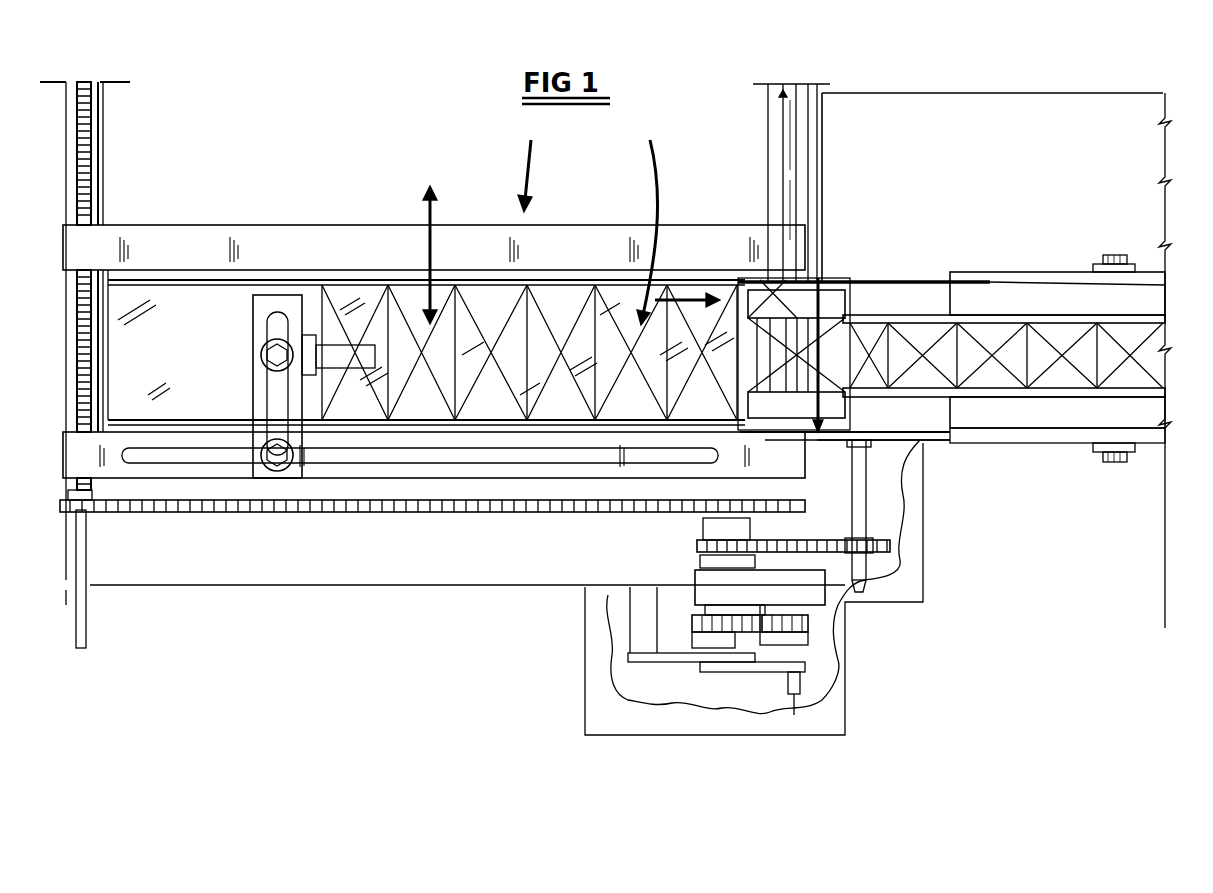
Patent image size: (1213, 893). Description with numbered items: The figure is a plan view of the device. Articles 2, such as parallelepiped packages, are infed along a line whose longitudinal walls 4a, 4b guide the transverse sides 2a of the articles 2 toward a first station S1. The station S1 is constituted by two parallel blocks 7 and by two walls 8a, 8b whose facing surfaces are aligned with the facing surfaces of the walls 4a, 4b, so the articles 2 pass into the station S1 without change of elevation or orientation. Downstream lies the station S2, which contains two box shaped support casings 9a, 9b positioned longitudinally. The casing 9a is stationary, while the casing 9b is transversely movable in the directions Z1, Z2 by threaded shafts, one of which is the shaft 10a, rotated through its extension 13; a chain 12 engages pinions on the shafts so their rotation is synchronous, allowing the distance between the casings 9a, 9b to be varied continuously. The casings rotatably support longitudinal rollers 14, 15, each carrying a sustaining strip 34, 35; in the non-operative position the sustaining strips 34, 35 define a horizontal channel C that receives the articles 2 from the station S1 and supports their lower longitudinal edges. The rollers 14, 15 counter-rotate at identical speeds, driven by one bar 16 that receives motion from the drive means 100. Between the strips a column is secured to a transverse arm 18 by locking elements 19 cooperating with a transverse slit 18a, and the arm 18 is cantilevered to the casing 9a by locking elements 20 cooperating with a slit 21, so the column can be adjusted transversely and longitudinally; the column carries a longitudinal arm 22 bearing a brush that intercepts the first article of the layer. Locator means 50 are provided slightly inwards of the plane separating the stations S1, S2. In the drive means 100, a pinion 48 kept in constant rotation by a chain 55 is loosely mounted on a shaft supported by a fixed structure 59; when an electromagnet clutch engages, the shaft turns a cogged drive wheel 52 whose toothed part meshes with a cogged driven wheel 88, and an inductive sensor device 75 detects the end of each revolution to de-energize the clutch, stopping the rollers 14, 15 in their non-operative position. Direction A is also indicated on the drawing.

The threaded shaft 10a is at (93, 177).
The support casing 9b is at (183, 245).
The article 2 is at (607, 300).
The slit 21 is at (333, 458).
The locking elements 20 is at (285, 455).
The chain 12 is at (145, 512).
The extension 13 is at (84, 614).
The support casing 9a is at (183, 468).
The transverse slit 18a is at (273, 392).
The transverse arm 18 is at (255, 472).
The locking elements 19 is at (270, 350).
The longitudinal arm 22 is at (345, 350).
The longitudinal roller 15 is at (237, 293).
The sustaining strip 35 is at (280, 300).
The longitudinal roller 14 is at (360, 413).
The sustaining strip 34 is at (488, 423).
The transverse direction Z1 is at (446, 255).
The transverse direction Z2 is at (454, 321).
The second station S2 is at (536, 160).
The horizontal channel C is at (649, 217).
The direction A is at (697, 295).
The block 7 is at (823, 292).
The first station S1 is at (835, 292).
The locator means 50 is at (760, 290).
The longitudinal wall 4b is at (1073, 287).
The transverse side 2a is at (945, 293).
The wall 8b is at (887, 305).
The longitudinal wall 4a is at (1030, 420).
The wall 8a is at (775, 448).
The bar 16 is at (870, 555).
The pinion 48 is at (697, 546).
The fixed structure 59 is at (762, 602).
The cogged drive wheel 52 is at (740, 623).
The cogged driven wheel 88 is at (800, 636).
The inductive sensor device 75 is at (793, 677).
The chain 55 is at (850, 600).
The drive means 100 is at (655, 675).